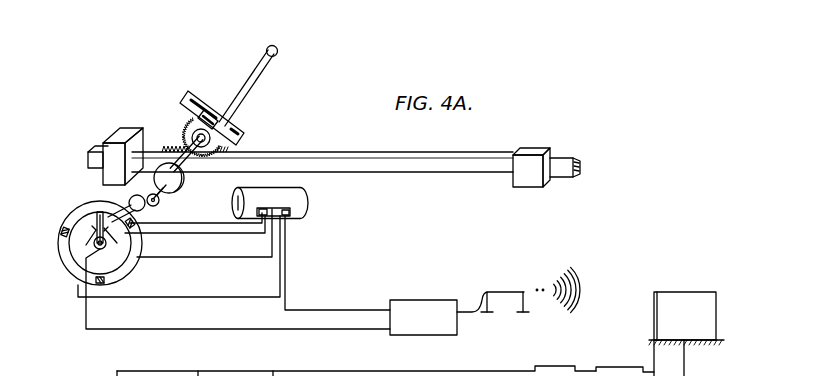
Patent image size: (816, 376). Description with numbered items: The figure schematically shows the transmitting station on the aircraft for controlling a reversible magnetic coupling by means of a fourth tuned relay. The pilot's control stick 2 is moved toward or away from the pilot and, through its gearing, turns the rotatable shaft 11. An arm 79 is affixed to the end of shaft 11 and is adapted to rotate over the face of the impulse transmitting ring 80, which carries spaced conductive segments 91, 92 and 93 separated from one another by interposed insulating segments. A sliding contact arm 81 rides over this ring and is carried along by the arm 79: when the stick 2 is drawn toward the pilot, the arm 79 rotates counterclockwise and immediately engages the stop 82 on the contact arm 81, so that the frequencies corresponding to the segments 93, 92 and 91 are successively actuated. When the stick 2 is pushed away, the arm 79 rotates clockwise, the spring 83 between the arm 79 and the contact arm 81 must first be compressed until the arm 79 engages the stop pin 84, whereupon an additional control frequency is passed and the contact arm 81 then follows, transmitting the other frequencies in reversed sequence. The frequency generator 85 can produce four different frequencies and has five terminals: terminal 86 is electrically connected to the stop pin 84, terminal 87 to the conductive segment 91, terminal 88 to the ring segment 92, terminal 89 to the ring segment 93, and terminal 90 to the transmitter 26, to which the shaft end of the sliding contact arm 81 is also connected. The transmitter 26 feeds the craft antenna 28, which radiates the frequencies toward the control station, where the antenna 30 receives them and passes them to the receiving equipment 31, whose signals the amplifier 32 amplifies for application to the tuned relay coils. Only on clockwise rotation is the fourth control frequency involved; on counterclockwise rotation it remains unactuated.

The control stick 2 is at (241, 94).
The rotatable shaft 11 is at (140, 208).
The transmitter 26 is at (417, 312).
The craft antenna 28 is at (500, 292).
The antenna 30 is at (681, 292).
The receiving equipment 31 is at (613, 371).
The amplifier 32 is at (553, 371).
The arm 79 is at (100, 209).
The impulse transmitting ring 80 is at (62, 258).
The sliding contact arm 81 is at (91, 211).
The stop 82 is at (92, 226).
The spring 83 is at (108, 227).
The stop pin 84 is at (158, 178).
The frequency generator 85 is at (307, 193).
The generator terminal 86 is at (236, 208).
The generator terminal 87 is at (268, 205).
The generator terminal 88 is at (294, 212).
The generator terminal 89 is at (292, 216).
The generator terminal 90 is at (305, 211).
The conductive segment 91 is at (68, 223).
The conductive ring segment 92 is at (128, 268).
The conductive ring segment 93 is at (73, 270).